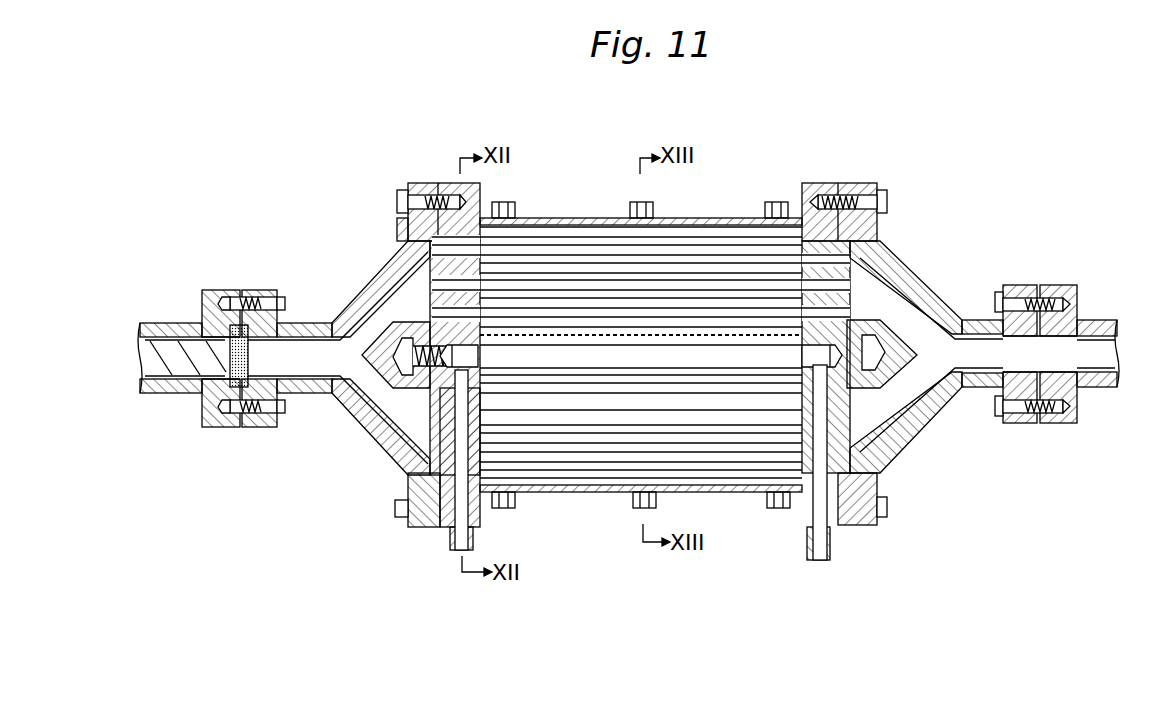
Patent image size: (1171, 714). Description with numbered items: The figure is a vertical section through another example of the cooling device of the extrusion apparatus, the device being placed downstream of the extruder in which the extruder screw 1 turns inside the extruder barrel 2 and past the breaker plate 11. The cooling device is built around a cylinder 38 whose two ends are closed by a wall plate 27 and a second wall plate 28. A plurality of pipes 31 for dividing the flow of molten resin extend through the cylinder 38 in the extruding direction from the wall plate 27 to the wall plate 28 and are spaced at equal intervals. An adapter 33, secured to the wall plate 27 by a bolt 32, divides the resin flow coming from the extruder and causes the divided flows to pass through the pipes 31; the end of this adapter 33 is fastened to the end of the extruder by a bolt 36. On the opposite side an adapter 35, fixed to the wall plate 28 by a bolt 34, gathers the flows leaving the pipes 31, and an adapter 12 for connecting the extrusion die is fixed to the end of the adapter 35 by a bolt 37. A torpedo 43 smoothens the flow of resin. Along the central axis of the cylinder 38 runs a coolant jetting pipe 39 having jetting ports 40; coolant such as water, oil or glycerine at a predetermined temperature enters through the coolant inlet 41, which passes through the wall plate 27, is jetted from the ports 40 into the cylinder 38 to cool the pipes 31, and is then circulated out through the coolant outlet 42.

The extruder screw 1 is at (172, 328).
The extruder barrel 2 is at (155, 327).
The breaker plate 11 is at (298, 337).
The adapter 12 is at (1075, 312).
The wall plate 27 is at (440, 445).
The wall plate 28 is at (840, 395).
The pipes 31 is at (540, 242).
The bolt 32 is at (420, 203).
The adapter 33 is at (375, 290).
The bolt 34 is at (860, 205).
The adapter 35 is at (912, 282).
The bolt 36 is at (243, 293).
The bolt 37 is at (1012, 300).
The cylinder 38 is at (577, 495).
The coolant jetting pipe 39 is at (645, 335).
The jetting port 40 is at (550, 337).
The coolant inlet 41 is at (830, 540).
The coolant outlet 42 is at (777, 204).
The torpedo 43 is at (920, 353).